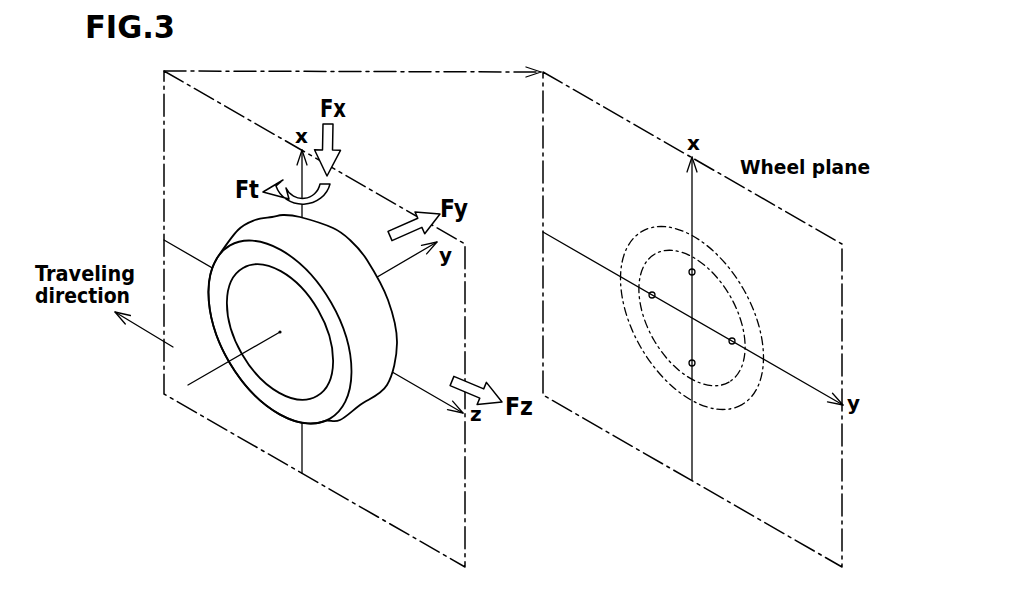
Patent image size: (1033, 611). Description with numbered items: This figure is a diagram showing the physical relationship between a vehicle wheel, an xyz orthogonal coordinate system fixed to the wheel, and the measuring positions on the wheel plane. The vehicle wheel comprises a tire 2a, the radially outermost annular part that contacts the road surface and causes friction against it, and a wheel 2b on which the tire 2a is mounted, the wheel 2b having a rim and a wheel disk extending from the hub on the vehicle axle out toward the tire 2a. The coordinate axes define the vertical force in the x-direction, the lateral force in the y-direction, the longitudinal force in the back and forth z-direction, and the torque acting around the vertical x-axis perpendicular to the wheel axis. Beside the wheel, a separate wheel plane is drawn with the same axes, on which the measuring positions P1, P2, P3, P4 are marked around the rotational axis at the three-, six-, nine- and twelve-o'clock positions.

The tire 2a is at (275, 402).
The wheel 2b is at (280, 377).
The measuring position P1 is at (707, 370).
The measuring position P2 is at (663, 311).
The measuring position P3 is at (677, 266).
The measuring position P4 is at (721, 326).